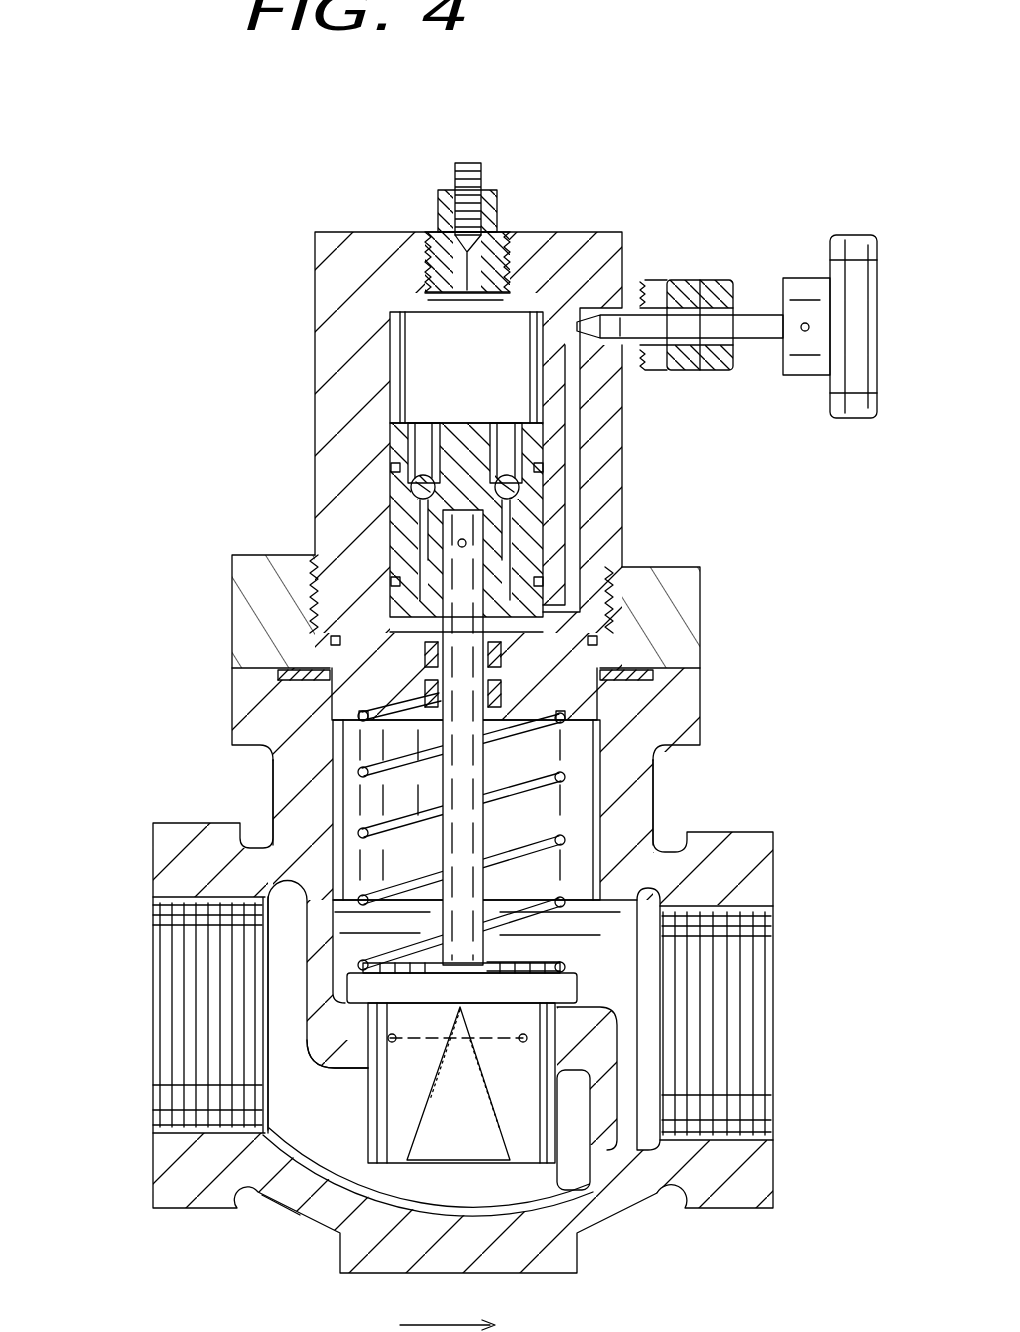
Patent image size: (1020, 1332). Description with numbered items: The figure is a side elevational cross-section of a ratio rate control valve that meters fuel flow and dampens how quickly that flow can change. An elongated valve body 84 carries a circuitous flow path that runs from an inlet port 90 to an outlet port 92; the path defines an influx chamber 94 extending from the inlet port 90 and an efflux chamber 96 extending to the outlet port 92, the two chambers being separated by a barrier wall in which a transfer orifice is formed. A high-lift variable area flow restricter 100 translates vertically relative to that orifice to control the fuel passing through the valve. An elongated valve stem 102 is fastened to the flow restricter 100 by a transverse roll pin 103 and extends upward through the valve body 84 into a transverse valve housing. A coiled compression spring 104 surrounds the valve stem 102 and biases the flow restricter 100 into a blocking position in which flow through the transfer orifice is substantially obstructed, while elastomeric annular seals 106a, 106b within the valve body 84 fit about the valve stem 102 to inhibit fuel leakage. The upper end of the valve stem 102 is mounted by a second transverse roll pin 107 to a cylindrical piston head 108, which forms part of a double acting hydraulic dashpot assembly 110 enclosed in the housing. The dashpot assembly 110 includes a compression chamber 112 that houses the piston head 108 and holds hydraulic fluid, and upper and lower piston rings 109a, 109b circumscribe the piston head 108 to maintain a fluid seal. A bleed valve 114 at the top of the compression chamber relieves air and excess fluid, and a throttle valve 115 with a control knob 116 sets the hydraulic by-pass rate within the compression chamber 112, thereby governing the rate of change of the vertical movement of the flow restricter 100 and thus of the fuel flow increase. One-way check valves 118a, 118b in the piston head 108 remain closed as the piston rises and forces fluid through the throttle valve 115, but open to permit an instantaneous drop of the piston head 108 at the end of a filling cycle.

The valve body 84 is at (720, 1200).
The inlet port 90 is at (258, 1130).
The outlet port 92 is at (775, 955).
The influx chamber 94 is at (318, 1192).
The efflux chamber 96 is at (530, 885).
The high-lift variable area flow restricter 100 is at (583, 1130).
The valve stem 102 is at (305, 738).
The transverse roll pin 103 is at (390, 1038).
The coiled compression spring 104 is at (365, 790).
The elastomeric annular seal 106a is at (425, 660).
The elastomeric annular seal 106b is at (500, 690).
The transverse roll pin 107 is at (487, 522).
The cylindrical piston head 108 is at (400, 512).
The upper piston ring 109a is at (395, 470).
The lower piston ring 109b is at (545, 580).
The double acting hydraulic dashpot assembly 110 is at (487, 346).
The compression chamber 112 is at (400, 362).
The bleed valve 114 is at (480, 180).
The throttle valve 115 is at (620, 315).
The control knob 116 is at (830, 270).
The one-way check valve 118a is at (418, 447).
The one-way check valve 118b is at (522, 450).